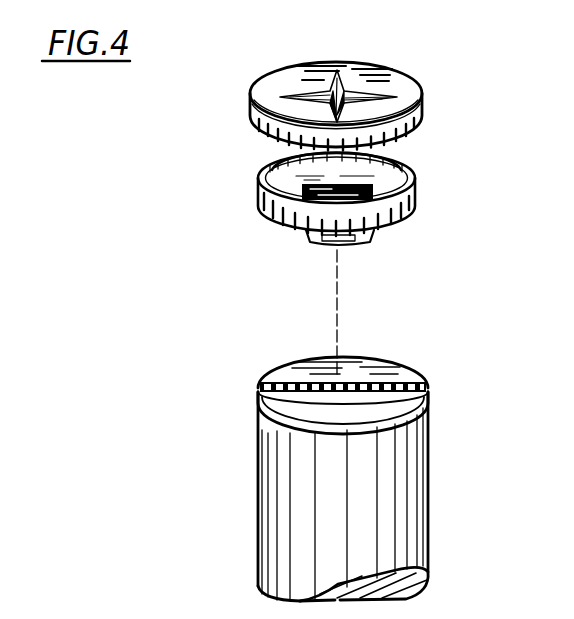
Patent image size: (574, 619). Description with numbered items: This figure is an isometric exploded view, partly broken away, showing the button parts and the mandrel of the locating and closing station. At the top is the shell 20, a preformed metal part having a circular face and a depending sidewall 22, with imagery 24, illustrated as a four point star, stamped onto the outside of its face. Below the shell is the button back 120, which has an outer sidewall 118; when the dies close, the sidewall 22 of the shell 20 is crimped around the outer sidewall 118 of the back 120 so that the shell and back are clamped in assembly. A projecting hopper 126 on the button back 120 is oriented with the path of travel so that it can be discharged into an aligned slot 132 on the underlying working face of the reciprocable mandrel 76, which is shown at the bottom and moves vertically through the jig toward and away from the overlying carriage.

The shell 20 is at (361, 84).
The sidewall 22 is at (423, 117).
The imagery 24 is at (366, 70).
The outer sidewall 118 is at (415, 200).
The button back 120 is at (318, 214).
The hopper 126 is at (372, 240).
The slot 132 is at (404, 372).
The mandrel 76 is at (376, 467).